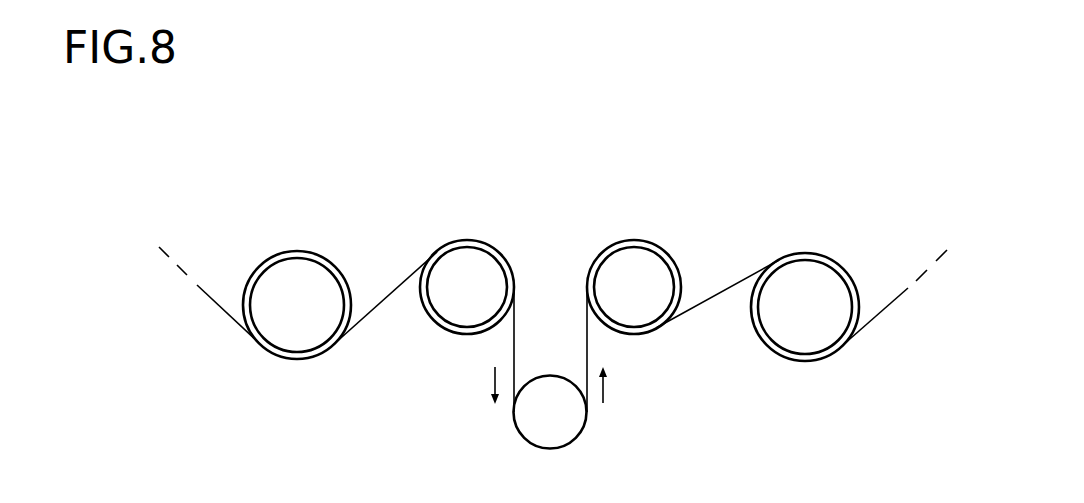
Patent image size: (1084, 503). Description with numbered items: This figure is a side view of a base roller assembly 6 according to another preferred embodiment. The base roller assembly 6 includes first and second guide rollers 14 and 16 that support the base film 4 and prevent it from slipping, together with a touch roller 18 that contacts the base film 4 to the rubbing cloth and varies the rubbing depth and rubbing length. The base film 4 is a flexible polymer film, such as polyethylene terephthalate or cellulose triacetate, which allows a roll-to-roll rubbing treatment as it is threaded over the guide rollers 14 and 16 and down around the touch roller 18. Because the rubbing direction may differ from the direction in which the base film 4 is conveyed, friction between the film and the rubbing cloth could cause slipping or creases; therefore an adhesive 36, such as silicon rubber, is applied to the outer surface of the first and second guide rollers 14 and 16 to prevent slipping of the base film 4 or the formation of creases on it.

The base film 4 is at (711, 295).
The base roller assembly 6 is at (200, 307).
The first guide roller 14 is at (297, 270).
The second guide roller 16 is at (467, 262).
The touch roller 18 is at (575, 417).
The adhesive 36 is at (333, 263).